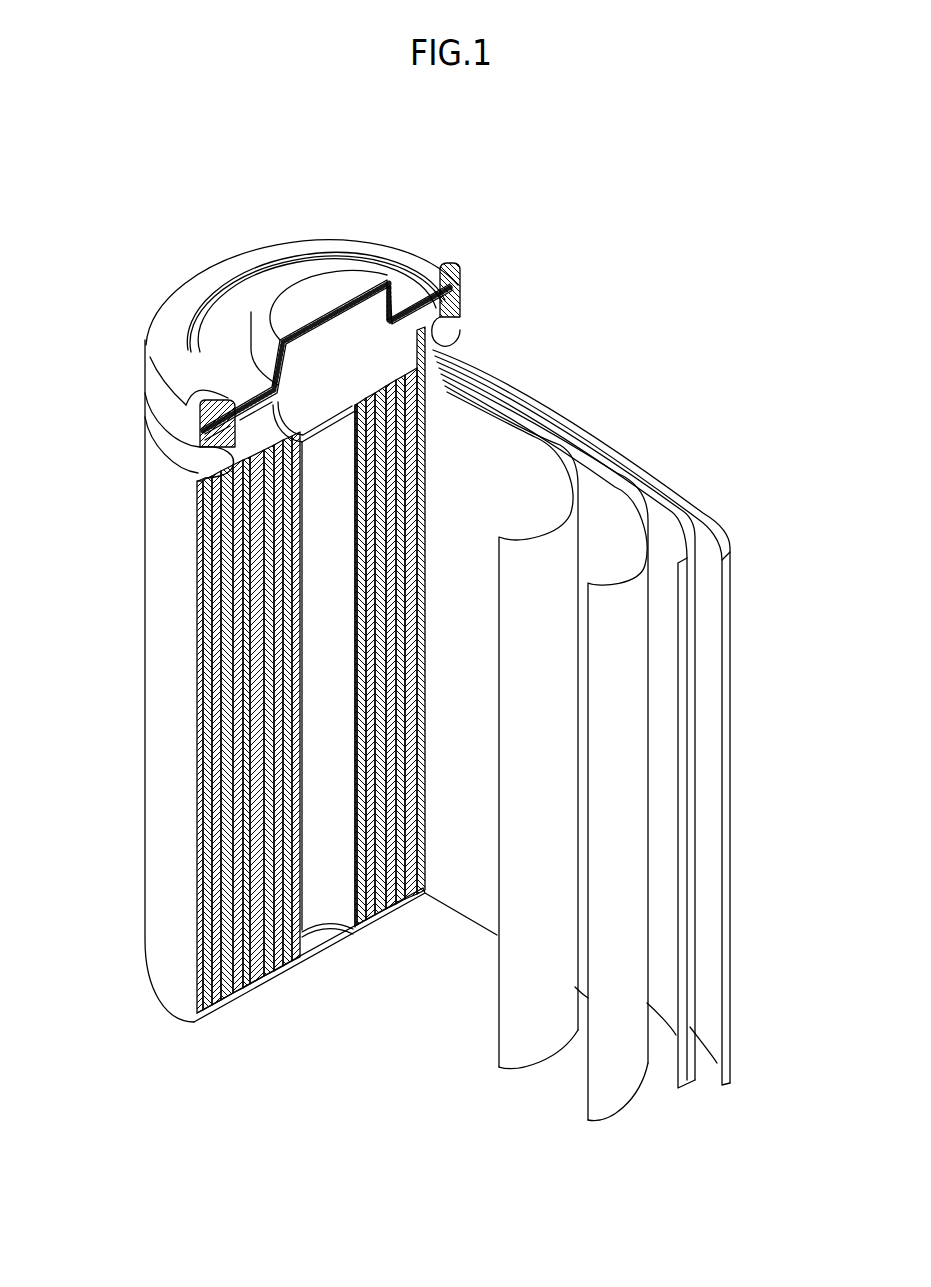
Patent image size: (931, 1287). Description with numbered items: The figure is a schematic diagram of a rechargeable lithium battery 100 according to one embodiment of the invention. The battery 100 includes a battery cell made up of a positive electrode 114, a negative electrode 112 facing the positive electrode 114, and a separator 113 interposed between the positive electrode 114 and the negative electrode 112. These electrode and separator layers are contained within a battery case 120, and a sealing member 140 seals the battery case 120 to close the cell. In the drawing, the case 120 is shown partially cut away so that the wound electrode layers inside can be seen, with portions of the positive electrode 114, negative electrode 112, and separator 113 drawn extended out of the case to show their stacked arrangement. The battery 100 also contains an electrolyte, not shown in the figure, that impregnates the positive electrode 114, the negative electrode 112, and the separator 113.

The rechargeable lithium battery 100 is at (524, 214).
The negative electrode 112 is at (727, 540).
The separator 113 is at (535, 435).
The positive electrode 114 is at (615, 487).
The battery case 120 is at (157, 632).
The sealing member 140 is at (272, 297).